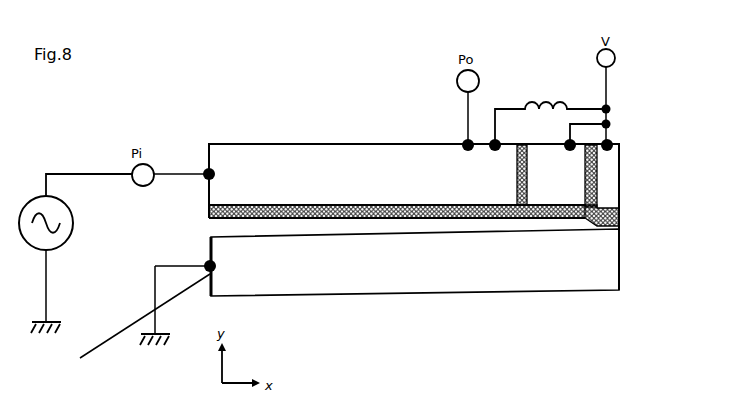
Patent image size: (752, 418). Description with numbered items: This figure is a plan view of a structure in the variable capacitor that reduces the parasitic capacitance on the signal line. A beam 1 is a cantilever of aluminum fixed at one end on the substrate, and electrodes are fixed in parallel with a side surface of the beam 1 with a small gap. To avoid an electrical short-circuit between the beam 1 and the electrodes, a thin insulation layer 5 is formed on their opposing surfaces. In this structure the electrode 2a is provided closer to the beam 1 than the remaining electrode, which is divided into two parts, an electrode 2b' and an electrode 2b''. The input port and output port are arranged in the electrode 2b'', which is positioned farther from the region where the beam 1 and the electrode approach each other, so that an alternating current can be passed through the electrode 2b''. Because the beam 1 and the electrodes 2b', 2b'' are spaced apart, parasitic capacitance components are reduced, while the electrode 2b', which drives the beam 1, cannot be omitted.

The beam 1 is at (333, 280).
The insulation layer 5 is at (342, 213).
The electrode 2a is at (612, 163).
The electrode 2b' is at (629, 175).
The electrode 2b'' is at (363, 145).